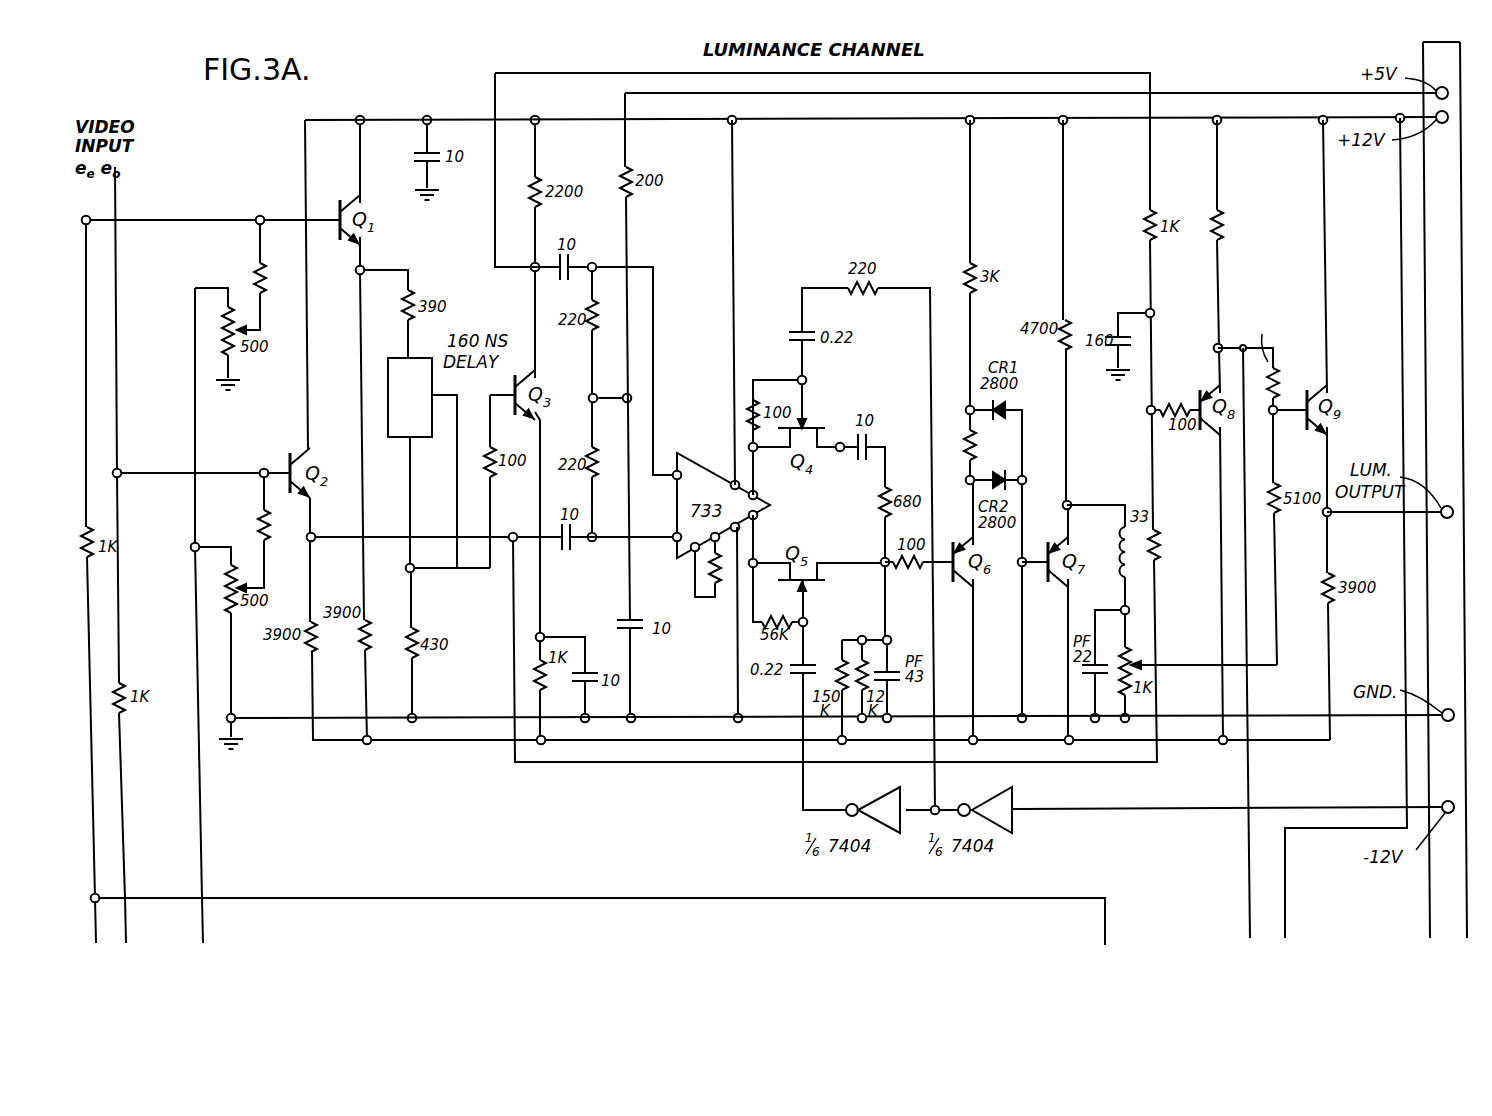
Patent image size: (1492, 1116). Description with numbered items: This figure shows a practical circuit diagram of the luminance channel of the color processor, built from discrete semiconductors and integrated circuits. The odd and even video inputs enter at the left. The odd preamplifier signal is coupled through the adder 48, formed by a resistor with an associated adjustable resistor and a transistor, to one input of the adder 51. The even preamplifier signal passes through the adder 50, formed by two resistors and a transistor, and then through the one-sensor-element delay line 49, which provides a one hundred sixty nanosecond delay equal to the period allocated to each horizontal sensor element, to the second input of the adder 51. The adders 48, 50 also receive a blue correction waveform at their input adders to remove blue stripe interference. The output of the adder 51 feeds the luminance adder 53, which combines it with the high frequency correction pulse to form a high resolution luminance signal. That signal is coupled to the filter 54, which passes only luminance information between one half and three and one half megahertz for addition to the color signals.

The adder 48 is at (250, 532).
The delay line 49 is at (420, 410).
The adder 50 is at (242, 268).
The adder 51 is at (1197, 389).
The luminance adder 53 is at (1312, 379).
The filter 54 is at (701, 469).